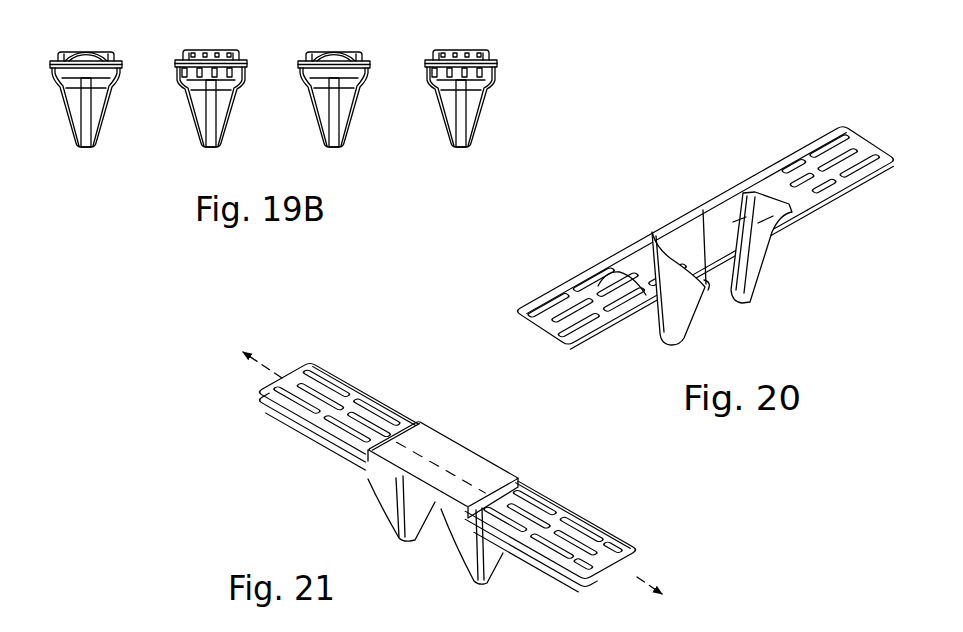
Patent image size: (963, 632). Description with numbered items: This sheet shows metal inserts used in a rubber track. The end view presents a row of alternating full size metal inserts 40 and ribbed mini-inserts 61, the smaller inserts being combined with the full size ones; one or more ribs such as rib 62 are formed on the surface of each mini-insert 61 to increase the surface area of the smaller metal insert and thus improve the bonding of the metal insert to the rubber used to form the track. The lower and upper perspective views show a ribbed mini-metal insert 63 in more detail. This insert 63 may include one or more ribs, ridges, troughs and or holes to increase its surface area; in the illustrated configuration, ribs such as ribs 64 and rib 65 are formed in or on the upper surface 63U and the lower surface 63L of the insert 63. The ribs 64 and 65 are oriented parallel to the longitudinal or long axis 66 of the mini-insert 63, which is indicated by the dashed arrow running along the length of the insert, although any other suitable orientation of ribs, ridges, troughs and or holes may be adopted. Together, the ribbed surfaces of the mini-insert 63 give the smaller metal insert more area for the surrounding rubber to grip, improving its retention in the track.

In FIG. 19B, the anchor member 40 is at (59, 123).
In FIG. 19B, the mini-insert 61 is at (186, 122).
In FIG. 19B, the rib 62 is at (487, 56).
In FIG. 20, the insert 63 is at (681, 226).
In FIG. 21, the insert 63 is at (440, 441).
In FIG. 20, the lower surface 63L is at (614, 326).
In FIG. 21, the upper surface 63U is at (578, 521).
In FIG. 20, the ribs 64 is at (828, 204).
In FIG. 21, the ribs 64 is at (350, 403).
In FIG. 20, the rib 65 is at (543, 313).
In FIG. 21, the rib 65 is at (532, 501).
In FIG. 21, the longitudinal or long axis 66 is at (263, 351).